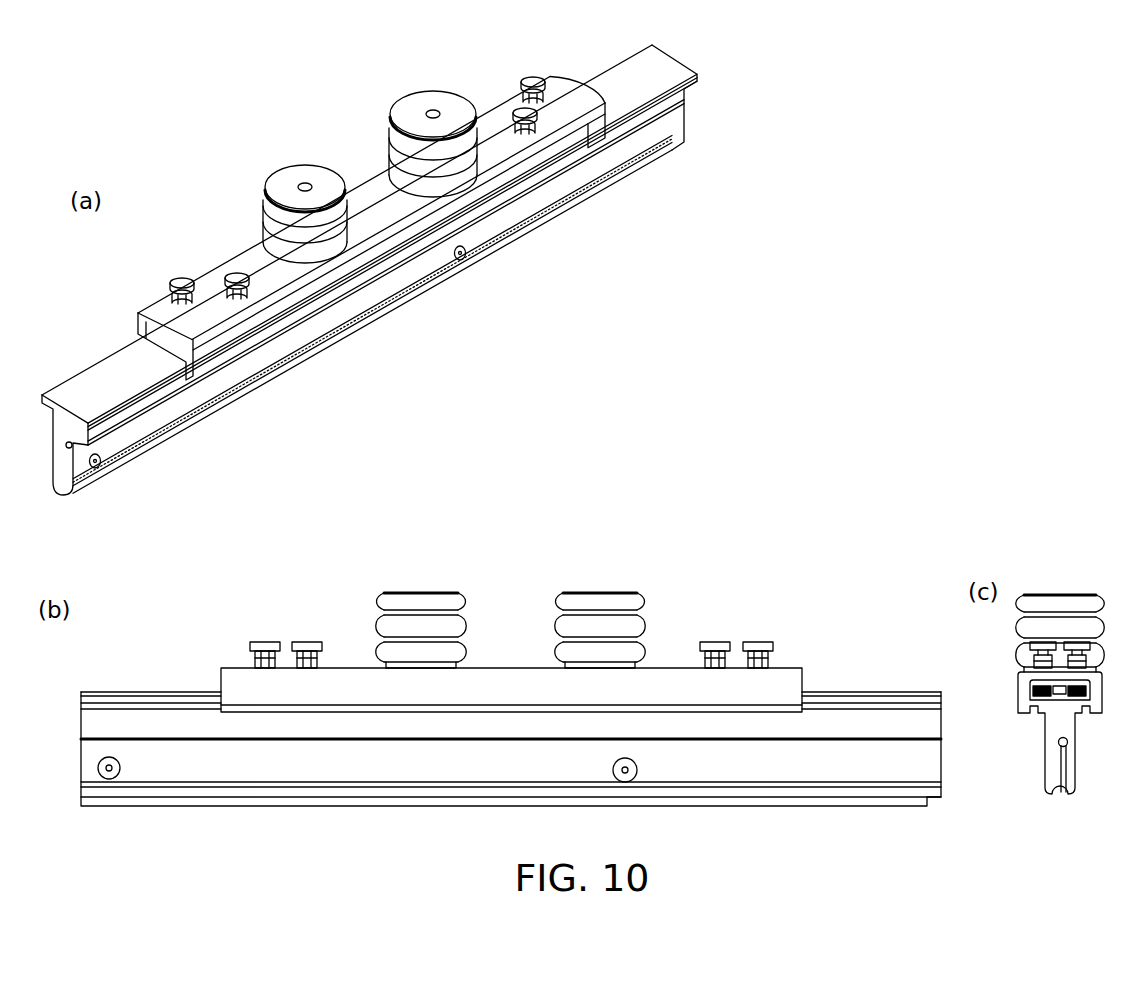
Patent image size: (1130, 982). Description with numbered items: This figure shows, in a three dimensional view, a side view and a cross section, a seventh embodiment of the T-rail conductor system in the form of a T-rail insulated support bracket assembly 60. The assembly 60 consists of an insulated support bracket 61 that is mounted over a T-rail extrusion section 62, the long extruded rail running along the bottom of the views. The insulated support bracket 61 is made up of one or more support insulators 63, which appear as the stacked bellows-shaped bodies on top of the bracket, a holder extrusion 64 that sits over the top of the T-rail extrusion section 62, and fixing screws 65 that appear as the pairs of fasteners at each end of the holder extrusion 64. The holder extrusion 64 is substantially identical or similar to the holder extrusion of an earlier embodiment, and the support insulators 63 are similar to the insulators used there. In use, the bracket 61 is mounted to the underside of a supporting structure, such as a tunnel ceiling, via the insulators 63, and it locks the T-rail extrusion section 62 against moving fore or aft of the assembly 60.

The T-rail insulated support bracket assembly 60 is at (355, 99).
The insulated support bracket 61 is at (287, 164).
The T-rail extrusion section 62 is at (616, 73).
The support insulators 63 is at (448, 100).
The holder extrusion 64 is at (208, 279).
The fixing screws 65 is at (533, 77).